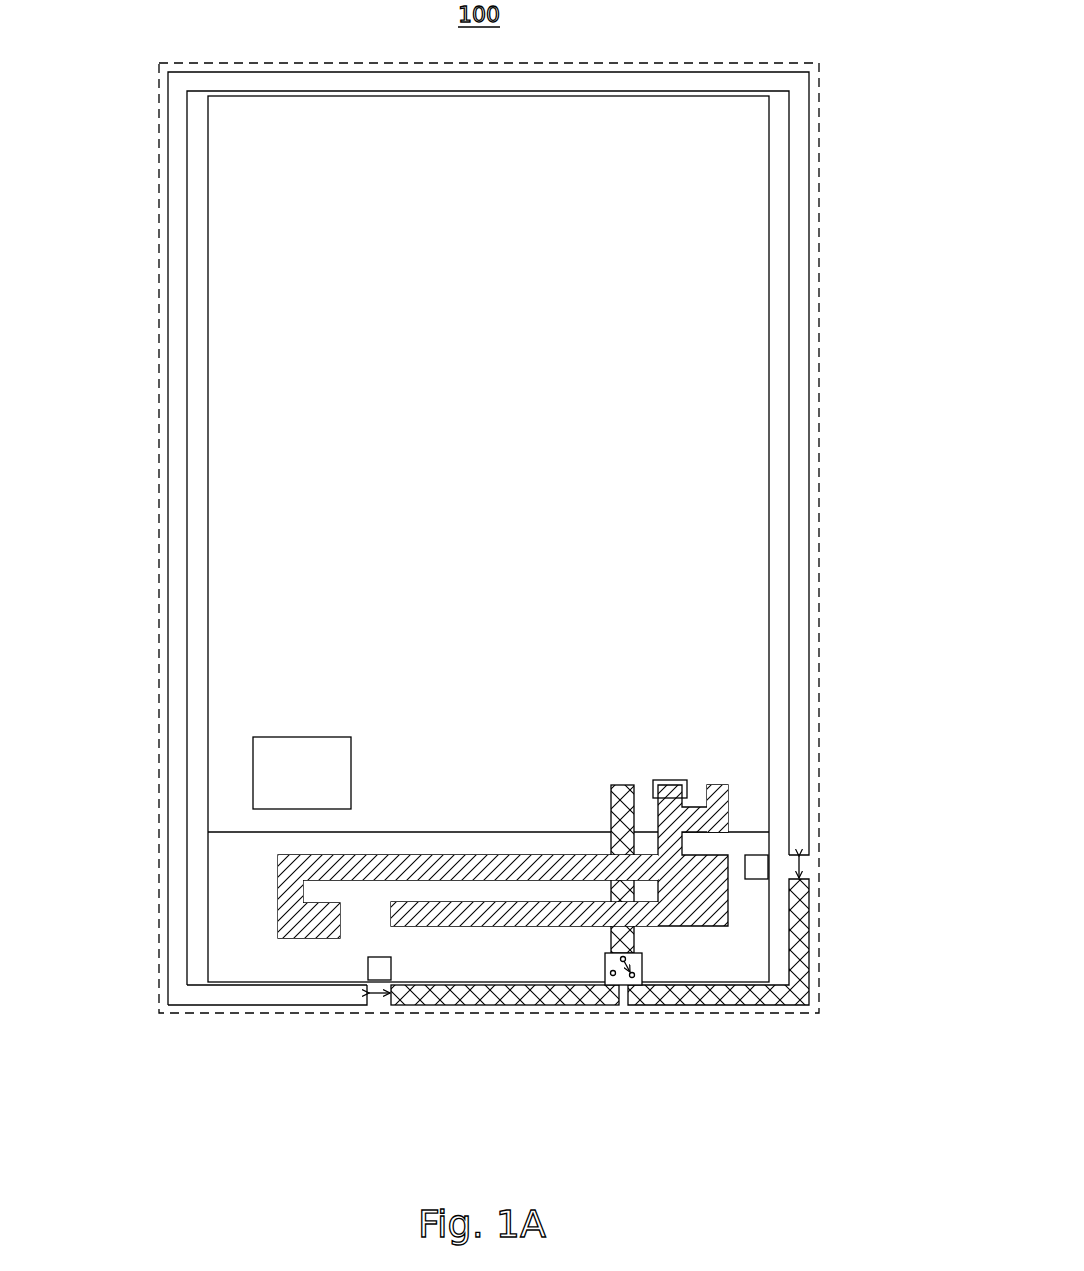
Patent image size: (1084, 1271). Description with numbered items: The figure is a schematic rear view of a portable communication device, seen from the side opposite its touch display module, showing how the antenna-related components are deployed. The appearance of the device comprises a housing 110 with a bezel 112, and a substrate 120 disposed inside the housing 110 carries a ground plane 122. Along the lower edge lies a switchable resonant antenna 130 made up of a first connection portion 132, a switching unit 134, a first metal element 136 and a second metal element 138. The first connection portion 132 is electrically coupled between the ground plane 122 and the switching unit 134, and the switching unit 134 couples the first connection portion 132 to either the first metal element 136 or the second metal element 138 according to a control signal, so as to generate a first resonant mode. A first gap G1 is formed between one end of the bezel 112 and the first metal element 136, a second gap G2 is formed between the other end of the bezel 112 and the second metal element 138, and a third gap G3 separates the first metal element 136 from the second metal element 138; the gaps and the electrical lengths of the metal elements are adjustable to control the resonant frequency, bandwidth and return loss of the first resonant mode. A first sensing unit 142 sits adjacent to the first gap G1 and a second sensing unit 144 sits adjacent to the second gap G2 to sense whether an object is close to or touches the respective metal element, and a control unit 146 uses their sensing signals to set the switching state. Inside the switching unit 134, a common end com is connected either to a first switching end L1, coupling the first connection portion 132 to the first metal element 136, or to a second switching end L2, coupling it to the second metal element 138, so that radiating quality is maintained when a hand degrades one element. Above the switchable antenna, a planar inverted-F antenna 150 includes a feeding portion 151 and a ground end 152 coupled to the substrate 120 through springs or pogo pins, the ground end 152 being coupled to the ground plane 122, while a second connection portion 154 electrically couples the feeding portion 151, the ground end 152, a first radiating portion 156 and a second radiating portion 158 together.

The housing 110 is at (818, 200).
The bezel 112 is at (798, 734).
The substrate 120 is at (770, 362).
The ground plane 122 is at (748, 289).
The switchable resonant antenna 130 is at (600, 971).
The first connection portion 132 is at (611, 889).
The switching unit 134 is at (626, 1016).
The first metal element 136 is at (445, 1003).
The second metal element 138 is at (668, 1003).
The first sensing unit 142 is at (378, 968).
The second sensing unit 144 is at (757, 865).
The control unit 146 is at (262, 773).
The planar inverted-F antenna 150 is at (513, 800).
The feeding portion 151 is at (668, 758).
The ground end 152 is at (716, 790).
The second connection portion 154 is at (662, 812).
The first radiating portion 156 is at (498, 918).
The second radiating portion 158 is at (455, 858).
The first gap G1 is at (381, 998).
The second gap G2 is at (803, 870).
The third gap G3 is at (625, 1003).
The first switching end L1 is at (612, 974).
The second switching end L2 is at (643, 972).
The common end com is at (641, 956).